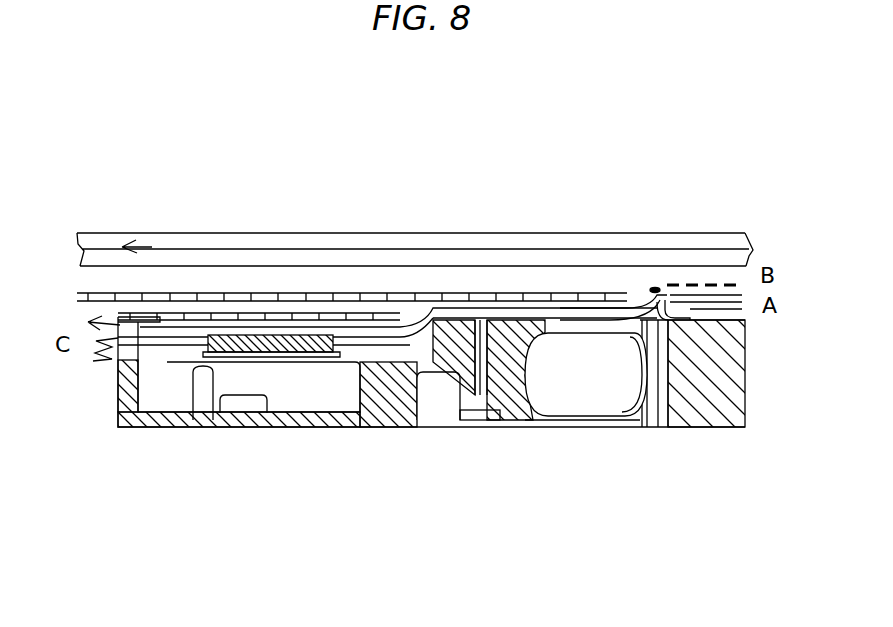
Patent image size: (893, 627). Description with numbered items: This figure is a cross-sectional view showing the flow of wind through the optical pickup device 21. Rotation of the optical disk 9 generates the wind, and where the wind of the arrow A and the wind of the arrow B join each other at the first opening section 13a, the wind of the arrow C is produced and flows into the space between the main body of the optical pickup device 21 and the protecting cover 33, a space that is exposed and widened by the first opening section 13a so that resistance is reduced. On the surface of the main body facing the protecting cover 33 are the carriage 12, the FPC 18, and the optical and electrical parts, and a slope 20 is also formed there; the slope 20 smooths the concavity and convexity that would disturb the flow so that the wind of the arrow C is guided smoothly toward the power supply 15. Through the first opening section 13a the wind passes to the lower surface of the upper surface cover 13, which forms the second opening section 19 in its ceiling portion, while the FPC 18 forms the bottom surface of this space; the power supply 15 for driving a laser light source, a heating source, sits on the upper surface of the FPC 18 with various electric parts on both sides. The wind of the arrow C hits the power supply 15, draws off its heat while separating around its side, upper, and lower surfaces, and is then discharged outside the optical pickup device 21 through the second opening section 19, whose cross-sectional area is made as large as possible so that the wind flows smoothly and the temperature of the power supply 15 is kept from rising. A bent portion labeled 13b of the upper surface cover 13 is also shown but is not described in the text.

The optical disk 9 is at (100, 233).
The carriage 12 is at (230, 428).
The upper surface cover 13 is at (212, 305).
The first opening section 13a is at (540, 318).
The bent portion of strip 13b is at (660, 290).
The power supply 15 is at (285, 335).
The FPC 18 is at (288, 372).
The second opening section 19 is at (112, 360).
The slope 20 is at (432, 328).
The optical pickup device 21 is at (210, 538).
The protecting cover 33 is at (467, 290).